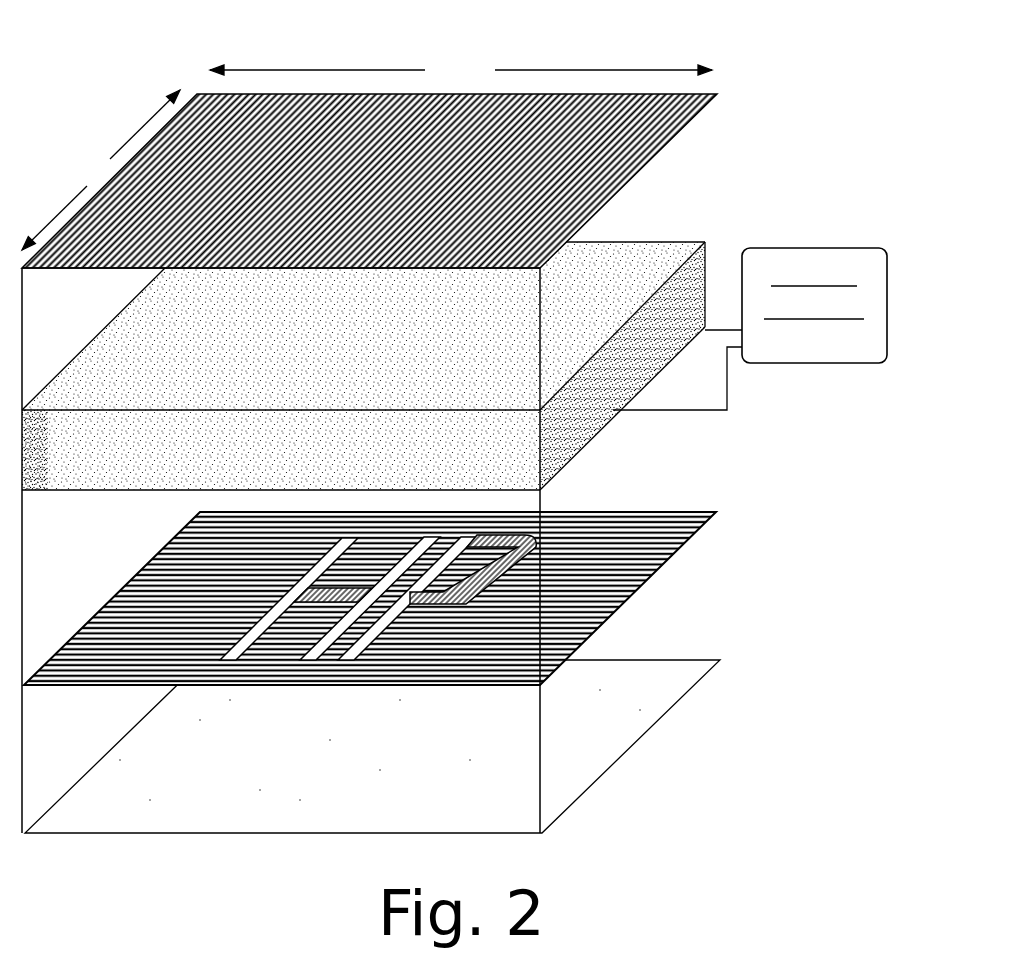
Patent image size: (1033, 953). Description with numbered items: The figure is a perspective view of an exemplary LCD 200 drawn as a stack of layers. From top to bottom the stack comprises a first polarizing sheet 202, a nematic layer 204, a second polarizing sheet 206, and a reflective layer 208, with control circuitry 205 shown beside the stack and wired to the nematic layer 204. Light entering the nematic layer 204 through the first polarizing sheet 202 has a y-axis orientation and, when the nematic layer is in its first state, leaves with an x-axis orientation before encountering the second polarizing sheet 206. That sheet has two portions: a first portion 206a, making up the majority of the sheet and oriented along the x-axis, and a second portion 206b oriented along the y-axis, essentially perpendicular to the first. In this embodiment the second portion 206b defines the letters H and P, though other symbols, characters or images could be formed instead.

The LCD 200 is at (452, 422).
The first polarizing sheet 202 is at (529, 247).
The nematic layer 204 is at (506, 465).
The control circuitry 205 is at (791, 351).
The second polarizing sheet 206 is at (366, 597).
The first portion 206a is at (516, 656).
The second portion 206b is at (226, 585).
The reflective layer 208 is at (504, 815).